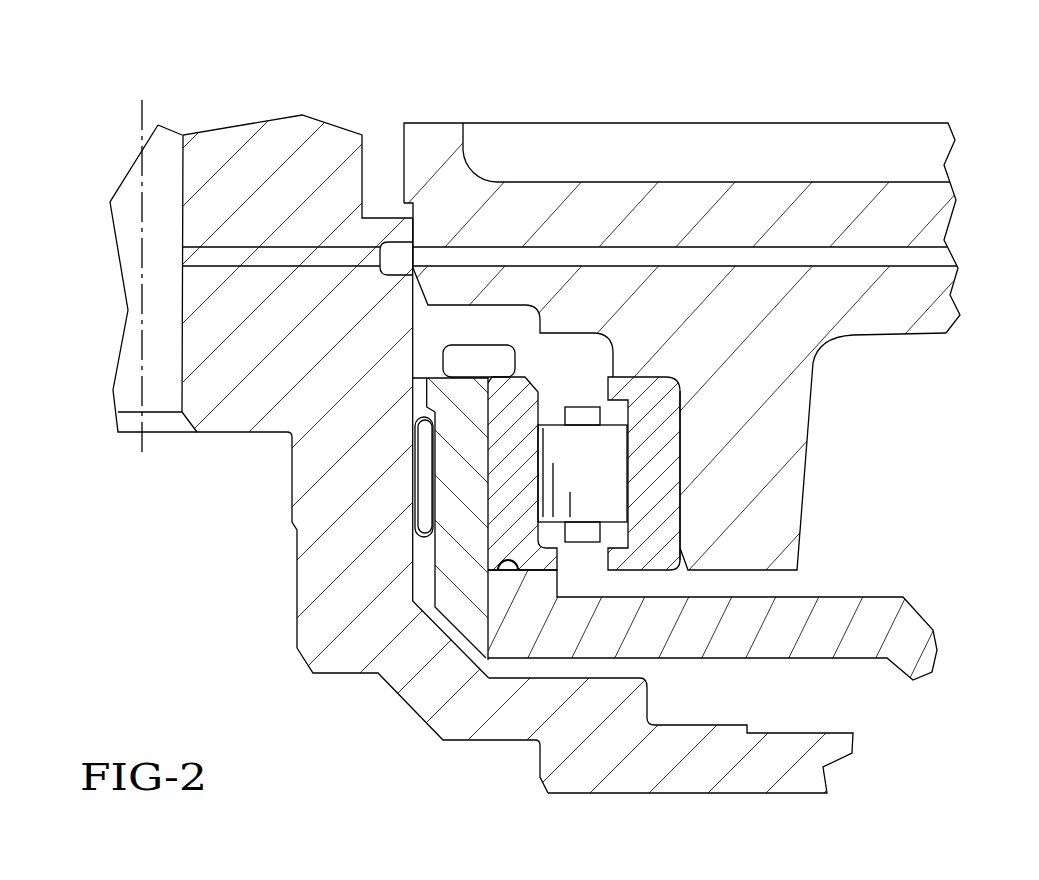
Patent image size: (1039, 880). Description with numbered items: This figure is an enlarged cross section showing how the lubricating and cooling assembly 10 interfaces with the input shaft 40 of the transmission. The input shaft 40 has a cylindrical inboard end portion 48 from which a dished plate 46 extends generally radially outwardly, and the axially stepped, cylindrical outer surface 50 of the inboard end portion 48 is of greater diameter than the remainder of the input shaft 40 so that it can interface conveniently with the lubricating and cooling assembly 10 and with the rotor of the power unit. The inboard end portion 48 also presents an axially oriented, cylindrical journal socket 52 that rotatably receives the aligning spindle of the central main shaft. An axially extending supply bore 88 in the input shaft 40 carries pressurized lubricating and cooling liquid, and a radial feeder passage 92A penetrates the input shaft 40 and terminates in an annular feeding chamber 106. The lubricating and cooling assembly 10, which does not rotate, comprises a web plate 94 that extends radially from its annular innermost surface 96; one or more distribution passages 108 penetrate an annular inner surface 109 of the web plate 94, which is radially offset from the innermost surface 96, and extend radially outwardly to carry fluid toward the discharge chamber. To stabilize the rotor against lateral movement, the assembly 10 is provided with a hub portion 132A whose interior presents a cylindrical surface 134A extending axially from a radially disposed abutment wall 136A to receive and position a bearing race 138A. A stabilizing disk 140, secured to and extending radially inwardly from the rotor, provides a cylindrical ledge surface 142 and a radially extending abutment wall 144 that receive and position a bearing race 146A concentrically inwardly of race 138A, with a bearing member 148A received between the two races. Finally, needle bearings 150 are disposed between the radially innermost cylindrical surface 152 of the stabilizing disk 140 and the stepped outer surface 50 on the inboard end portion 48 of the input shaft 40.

The lubricating and cooling assembly 10 is at (912, 123).
The input shaft 40 is at (207, 193).
The dished plate 46 is at (770, 763).
The inboard end portion 48 is at (330, 630).
The axially stepped, cylindrical outer surface 50 is at (412, 378).
The journal socket 52 is at (297, 547).
The supply bore 88 is at (162, 208).
The radial feeder passage 92A is at (248, 257).
The web plate 94 is at (730, 212).
The annular innermost surface 96 is at (403, 148).
The annular feeding chamber 106 is at (393, 257).
The distribution passage 108 is at (807, 255).
The annular inner surface 109 is at (412, 212).
The hub portion 132A is at (737, 527).
The cylindrical surface 134A is at (677, 493).
The abutment wall 136A is at (613, 387).
The bearing race 138A is at (657, 410).
The stabilizing disk 140 is at (905, 622).
The cylindrical ledge surface 142 is at (488, 460).
The abutment wall 144 is at (497, 563).
The bearing race 146A is at (513, 418).
The bearing member 148A is at (586, 508).
The needle bearings 150 is at (425, 485).
The radially innermost cylindrical surface 152 is at (435, 583).